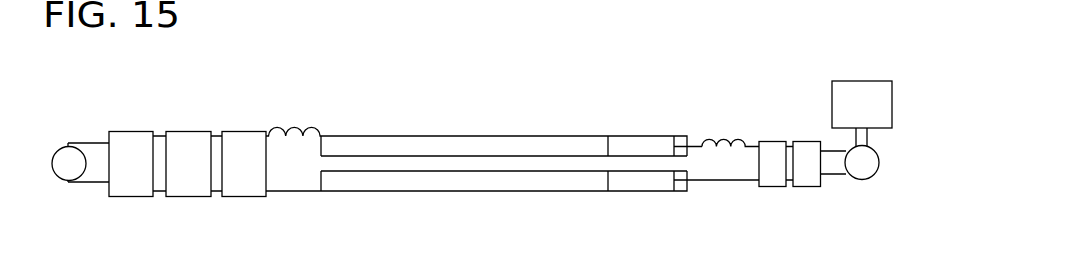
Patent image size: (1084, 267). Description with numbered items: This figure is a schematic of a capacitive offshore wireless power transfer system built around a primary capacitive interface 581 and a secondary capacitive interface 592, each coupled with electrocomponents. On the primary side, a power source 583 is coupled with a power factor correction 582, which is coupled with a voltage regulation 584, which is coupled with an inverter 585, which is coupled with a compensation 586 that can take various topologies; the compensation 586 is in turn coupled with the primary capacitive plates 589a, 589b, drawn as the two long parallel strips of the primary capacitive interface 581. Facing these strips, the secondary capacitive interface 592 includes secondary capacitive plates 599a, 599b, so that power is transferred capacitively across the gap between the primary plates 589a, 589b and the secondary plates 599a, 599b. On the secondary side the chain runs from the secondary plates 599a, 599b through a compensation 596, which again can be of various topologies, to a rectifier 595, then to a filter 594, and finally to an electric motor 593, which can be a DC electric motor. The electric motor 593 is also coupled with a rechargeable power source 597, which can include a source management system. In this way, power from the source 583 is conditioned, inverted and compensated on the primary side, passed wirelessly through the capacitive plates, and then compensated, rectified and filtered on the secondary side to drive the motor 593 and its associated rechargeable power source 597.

The primary capacitive interface 581 is at (540, 148).
The power factor correction 582 is at (133, 132).
The power source 583 is at (62, 147).
The voltage regulation 584 is at (189, 132).
The inverter 585 is at (244, 132).
The compensation 586 is at (294, 127).
The primary capacitive plate 589a is at (378, 143).
The primary capacitive plate 589b is at (378, 185).
The secondary capacitive interface 592 is at (585, 118).
The secondary capacitive plate 599a is at (631, 143).
The secondary capacitive plate 599b is at (631, 185).
The compensation 596 is at (723, 139).
The rectifier 595 is at (772, 186).
The filter 594 is at (807, 186).
The electric motor 593 is at (879, 162).
The rechargeable power source 597 is at (892, 104).